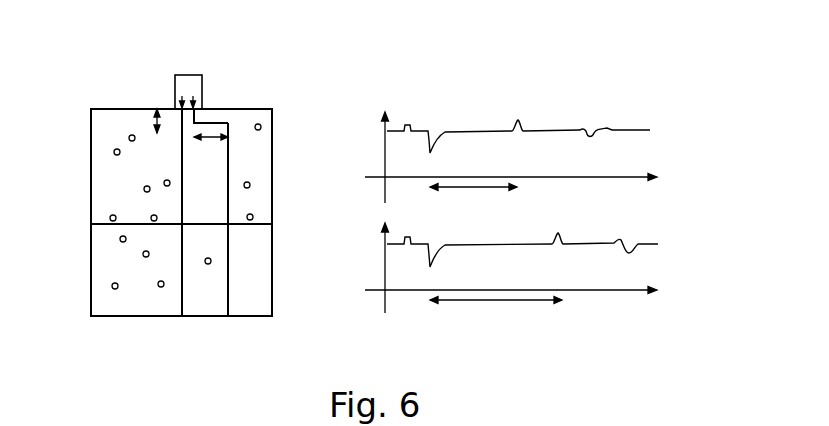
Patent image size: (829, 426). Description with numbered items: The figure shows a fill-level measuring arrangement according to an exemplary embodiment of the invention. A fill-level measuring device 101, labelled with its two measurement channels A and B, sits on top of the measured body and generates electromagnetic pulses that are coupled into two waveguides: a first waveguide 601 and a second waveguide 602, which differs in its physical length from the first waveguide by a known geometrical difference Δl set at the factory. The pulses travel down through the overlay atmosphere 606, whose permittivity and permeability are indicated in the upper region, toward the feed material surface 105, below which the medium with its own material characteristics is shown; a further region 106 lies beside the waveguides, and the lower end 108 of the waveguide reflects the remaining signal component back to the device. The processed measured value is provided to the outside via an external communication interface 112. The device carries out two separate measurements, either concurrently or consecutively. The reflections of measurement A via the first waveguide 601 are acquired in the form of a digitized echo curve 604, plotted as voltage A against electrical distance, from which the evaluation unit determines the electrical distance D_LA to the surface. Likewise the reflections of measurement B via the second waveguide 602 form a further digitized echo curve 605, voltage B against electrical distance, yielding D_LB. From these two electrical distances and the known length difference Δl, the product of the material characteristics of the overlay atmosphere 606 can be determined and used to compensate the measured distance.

The fill-level measuring device 101 is at (190, 75).
The external communication interface 112 is at (175, 97).
The first waveguide 601 is at (181, 151).
The second waveguide 602 is at (232, 125).
The overlay atmosphere 606 is at (107, 188).
The feed material surface 105 is at (113, 228).
The right side region of test body 106 is at (260, 270).
The lower end of the waveguide 108 is at (260, 316).
The digitized echo curve 604 is at (565, 128).
The further digitized echo curve 605 is at (559, 232).